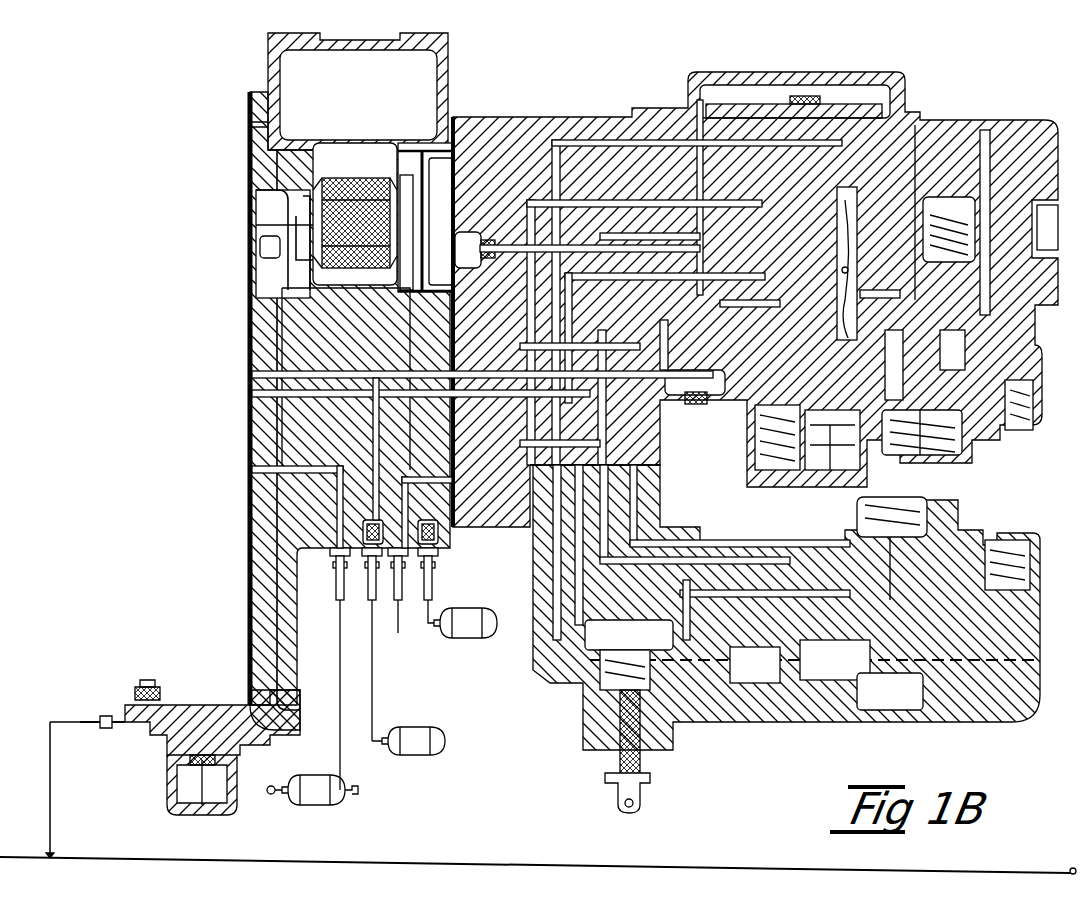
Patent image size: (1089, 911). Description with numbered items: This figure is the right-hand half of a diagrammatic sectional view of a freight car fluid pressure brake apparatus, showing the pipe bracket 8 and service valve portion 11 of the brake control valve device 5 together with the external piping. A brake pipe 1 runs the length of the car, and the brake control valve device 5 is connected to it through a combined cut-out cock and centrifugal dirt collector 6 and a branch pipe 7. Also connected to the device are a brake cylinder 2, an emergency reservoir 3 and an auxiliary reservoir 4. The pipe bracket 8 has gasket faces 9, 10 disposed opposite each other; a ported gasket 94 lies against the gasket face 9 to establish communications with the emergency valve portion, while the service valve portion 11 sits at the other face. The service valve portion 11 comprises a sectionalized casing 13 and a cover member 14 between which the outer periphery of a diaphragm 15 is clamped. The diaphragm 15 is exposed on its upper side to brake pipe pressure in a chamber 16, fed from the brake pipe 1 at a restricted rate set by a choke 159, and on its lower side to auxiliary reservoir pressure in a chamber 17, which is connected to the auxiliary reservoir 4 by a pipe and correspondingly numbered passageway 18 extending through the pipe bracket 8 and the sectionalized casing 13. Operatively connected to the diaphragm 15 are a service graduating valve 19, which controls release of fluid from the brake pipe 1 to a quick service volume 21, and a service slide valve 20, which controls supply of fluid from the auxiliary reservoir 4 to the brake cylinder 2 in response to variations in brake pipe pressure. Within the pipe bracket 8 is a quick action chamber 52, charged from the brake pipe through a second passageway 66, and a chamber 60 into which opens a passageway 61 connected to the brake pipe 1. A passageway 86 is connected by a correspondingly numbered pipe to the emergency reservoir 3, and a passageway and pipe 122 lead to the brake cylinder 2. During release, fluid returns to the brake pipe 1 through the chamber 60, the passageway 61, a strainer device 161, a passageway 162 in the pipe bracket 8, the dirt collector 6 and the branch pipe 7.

The brake pipe 1 is at (490, 858).
The brake cylinder 2 is at (306, 802).
The emergency reservoir 3 is at (418, 727).
The auxiliary reservoir 4 is at (470, 610).
The brake control valve device 5 is at (694, 316).
The combined cut-out cock and centrifugal dirt collector 6 is at (208, 697).
The branch pipe 7 is at (50, 800).
The pipe bracket 8 is at (375, 75).
The gasket face 9 is at (331, 396).
The gasket face 10 is at (451, 122).
The service valve portion 11 is at (944, 270).
The sectionalized casing 13 is at (497, 130).
The cover member 14 is at (823, 164).
The diaphragm 15 is at (895, 110).
The chamber 16 is at (858, 96).
The chamber 17 is at (903, 125).
The pipe and passageway 18 is at (592, 140).
The service graduating valve 19 is at (830, 226).
The service slide valve 20 is at (748, 402).
The quick service volume 21 is at (686, 396).
The quick action chamber 52 is at (437, 72).
The chamber 60 is at (281, 199).
The passageway 61 is at (296, 216).
The second passageway 66 is at (270, 126).
The passageway 86 is at (355, 378).
The ported gasket 94 is at (252, 598).
The passageway and pipe 122 is at (300, 466).
The choke 159 is at (495, 245).
The strainer device 161 is at (360, 185).
The passageway 162 is at (297, 296).